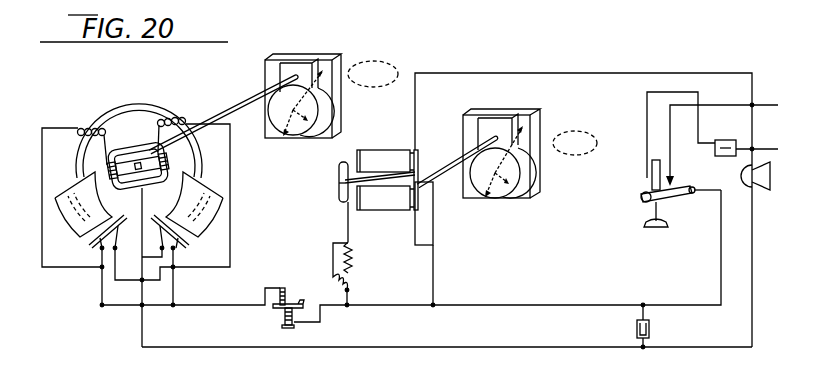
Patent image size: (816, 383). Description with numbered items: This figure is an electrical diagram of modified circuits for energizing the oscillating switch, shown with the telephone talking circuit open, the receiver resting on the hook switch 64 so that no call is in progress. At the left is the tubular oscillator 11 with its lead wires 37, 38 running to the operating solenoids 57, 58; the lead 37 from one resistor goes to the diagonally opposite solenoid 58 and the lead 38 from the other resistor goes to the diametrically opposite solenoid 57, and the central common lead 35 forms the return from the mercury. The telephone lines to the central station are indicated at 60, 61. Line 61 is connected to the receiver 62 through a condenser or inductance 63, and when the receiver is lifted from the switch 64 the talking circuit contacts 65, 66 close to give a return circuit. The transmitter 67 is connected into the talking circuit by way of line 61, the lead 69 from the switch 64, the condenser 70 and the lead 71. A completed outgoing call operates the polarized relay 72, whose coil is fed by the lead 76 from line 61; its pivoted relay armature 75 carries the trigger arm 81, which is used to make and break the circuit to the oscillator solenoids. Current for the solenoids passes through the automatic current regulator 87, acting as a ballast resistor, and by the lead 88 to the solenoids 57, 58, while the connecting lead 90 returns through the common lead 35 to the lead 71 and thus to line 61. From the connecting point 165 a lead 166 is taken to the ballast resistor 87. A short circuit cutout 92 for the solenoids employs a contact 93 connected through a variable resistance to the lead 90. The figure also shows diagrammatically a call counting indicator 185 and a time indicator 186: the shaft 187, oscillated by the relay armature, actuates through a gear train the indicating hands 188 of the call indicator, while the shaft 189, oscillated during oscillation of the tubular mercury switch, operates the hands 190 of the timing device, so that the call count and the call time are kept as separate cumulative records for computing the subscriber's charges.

The tubular oscillator 11 is at (142, 134).
The central common lead 35 is at (148, 220).
The lead wire 37 is at (82, 130).
The lead wire 38 is at (177, 119).
The operating solenoid 57 is at (82, 234).
The operating solenoid 58 is at (190, 233).
The telephone line 60 is at (770, 98).
The telephone line 61 is at (772, 142).
The receiver 62 is at (650, 214).
The condenser or inductance 63 is at (730, 132).
The hook switch 64 is at (683, 194).
The talking circuit contact 65 is at (663, 178).
The talking circuit contact 66 is at (673, 184).
The transmitter 67 is at (756, 190).
The lead 69 is at (572, 292).
The condenser 70 is at (651, 329).
The lead 71 is at (750, 296).
The relay 72 is at (394, 146).
The relay armature 75 is at (420, 208).
The lead 76 is at (598, 73).
The trigger arm 81 is at (386, 160).
The automatic current regulator 87 is at (272, 313).
The lead 88 is at (228, 304).
The connecting lead 90 is at (160, 347).
The short circuit cutout 92 is at (330, 260).
The contact 93 is at (338, 190).
The connecting point 165 is at (433, 307).
The lead 166 is at (384, 307).
The call counting indicator 185 is at (524, 208).
The time indicator 186 is at (348, 28).
The shaft 187 is at (460, 158).
The indicating hands 188 is at (515, 162).
The shaft 189 is at (260, 99).
The hands 190 is at (314, 98).